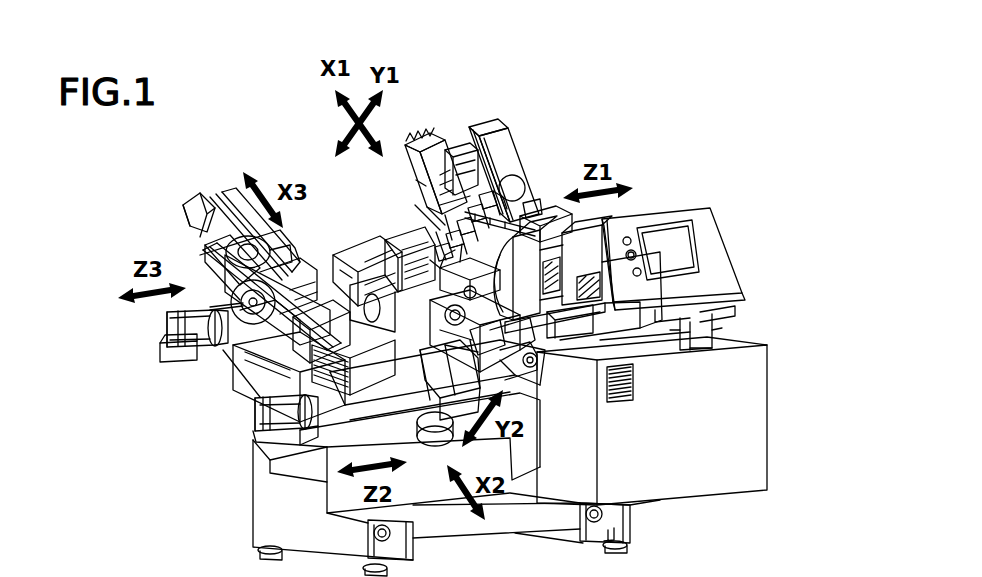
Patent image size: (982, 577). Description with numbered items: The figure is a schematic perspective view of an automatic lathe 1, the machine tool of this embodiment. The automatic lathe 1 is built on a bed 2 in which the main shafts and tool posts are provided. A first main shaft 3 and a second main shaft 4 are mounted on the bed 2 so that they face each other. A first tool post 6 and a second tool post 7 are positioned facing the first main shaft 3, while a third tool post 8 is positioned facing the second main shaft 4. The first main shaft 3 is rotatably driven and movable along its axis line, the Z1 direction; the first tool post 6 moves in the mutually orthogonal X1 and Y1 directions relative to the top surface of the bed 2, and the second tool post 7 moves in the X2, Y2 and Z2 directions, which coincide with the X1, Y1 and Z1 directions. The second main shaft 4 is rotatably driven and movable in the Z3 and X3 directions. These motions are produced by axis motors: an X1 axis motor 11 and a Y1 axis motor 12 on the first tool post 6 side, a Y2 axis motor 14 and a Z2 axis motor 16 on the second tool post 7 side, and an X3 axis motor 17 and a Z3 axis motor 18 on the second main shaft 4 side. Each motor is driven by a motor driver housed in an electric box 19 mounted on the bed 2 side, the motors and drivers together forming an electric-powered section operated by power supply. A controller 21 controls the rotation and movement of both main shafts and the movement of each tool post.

The automatic lathe 1 is at (553, 130).
The bed 2 is at (265, 377).
The first main shaft 3 is at (557, 230).
The second main shaft 4 is at (350, 253).
The first tool post 6 is at (440, 225).
The second tool post 7 is at (530, 352).
The third tool post 8 is at (398, 252).
The X1 axis motor 11 is at (413, 175).
The Y1 axis motor 12 is at (470, 165).
The Y2 axis motor 14 is at (460, 380).
The Z2 axis motor 16 is at (293, 413).
The X3 axis motor 17 is at (217, 233).
The Z3 axis motor 18 is at (209, 330).
The electric box 19 is at (742, 395).
The controller 21 is at (735, 258).